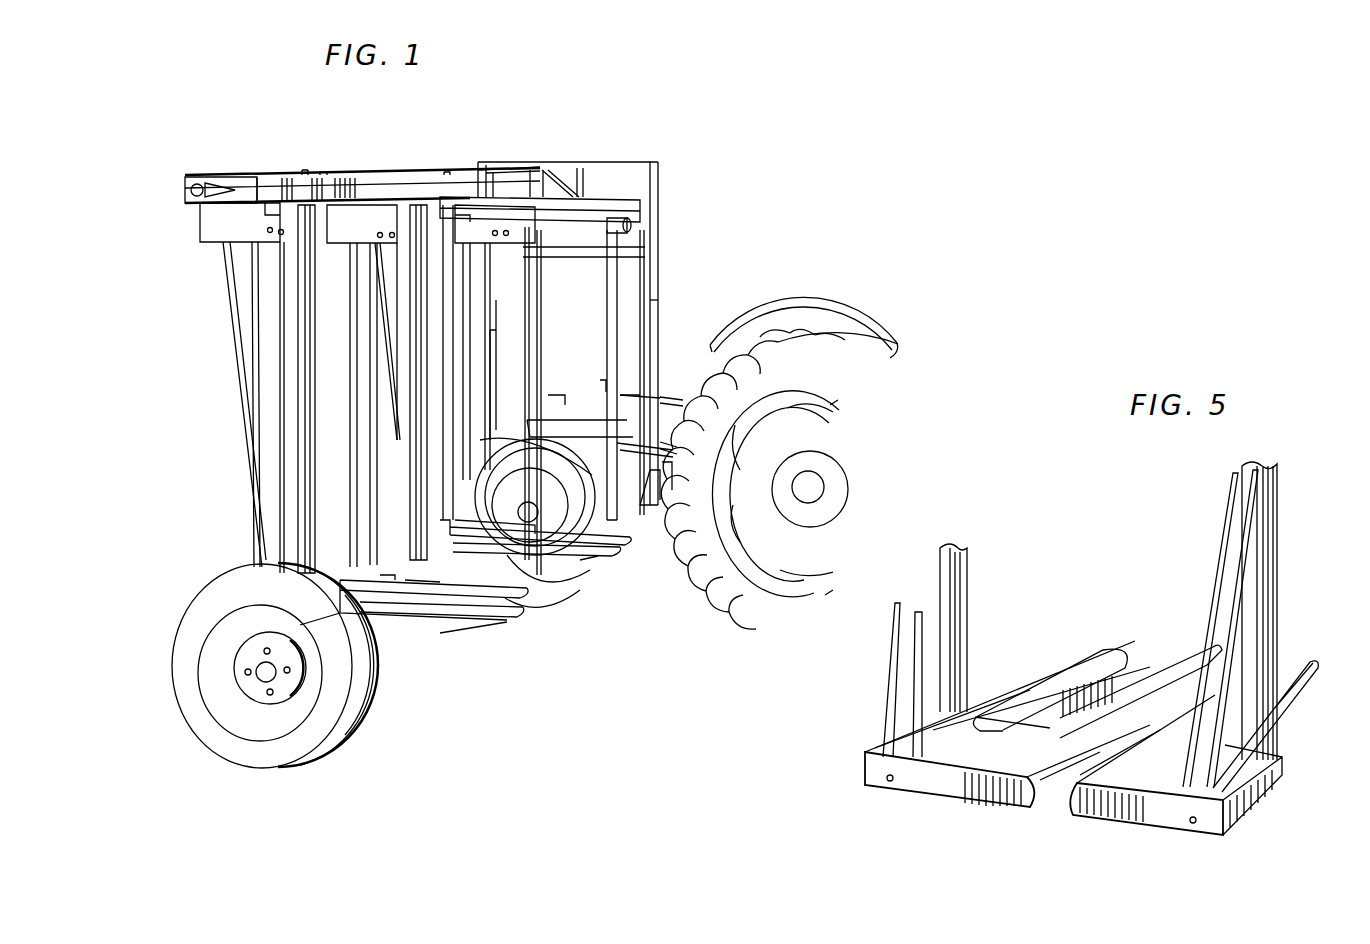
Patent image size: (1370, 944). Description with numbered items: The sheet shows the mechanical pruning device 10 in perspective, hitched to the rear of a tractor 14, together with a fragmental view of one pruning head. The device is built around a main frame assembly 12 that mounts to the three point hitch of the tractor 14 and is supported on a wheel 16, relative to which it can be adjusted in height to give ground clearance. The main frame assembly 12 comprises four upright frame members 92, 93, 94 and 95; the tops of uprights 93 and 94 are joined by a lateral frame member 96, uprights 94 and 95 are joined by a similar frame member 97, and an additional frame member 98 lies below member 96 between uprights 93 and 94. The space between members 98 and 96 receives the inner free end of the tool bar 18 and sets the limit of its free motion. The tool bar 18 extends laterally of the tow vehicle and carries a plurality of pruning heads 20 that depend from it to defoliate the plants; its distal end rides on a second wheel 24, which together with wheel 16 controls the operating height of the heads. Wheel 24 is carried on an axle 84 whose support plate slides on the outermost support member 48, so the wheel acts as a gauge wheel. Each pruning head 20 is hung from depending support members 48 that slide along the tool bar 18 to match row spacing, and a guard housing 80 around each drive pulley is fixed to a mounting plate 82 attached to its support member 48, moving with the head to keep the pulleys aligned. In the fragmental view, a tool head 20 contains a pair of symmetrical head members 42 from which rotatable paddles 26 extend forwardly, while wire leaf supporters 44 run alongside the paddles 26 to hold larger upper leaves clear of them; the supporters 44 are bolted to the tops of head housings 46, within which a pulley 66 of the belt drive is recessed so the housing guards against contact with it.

In FIG. 1, the mechanical pruning device 10 is at (716, 213).
In FIG. 1, the main frame assembly 12 is at (645, 152).
In FIG. 1, the tractor 14 is at (868, 310).
In FIG. 1, the wheel 16 is at (548, 445).
In FIG. 1, the tool bar 18 is at (356, 192).
In FIG. 1, the pruning head 20 is at (590, 575).
In FIG. 5, the pruning head 20 is at (1058, 608).
In FIG. 1, the second wheel 24 is at (315, 722).
In FIG. 5, the rotatable paddle 26 is at (1153, 672).
In FIG. 5, the head member 42 is at (1089, 664).
In FIG. 5, the wire leaf supporter 44 is at (1104, 646).
In FIG. 5, the head housing 46 is at (955, 778).
In FIG. 1, the support member 48 is at (297, 362).
In FIG. 5, the support member 48 is at (955, 608).
In FIG. 5, the pulley 66 is at (890, 760).
In FIG. 1, the housing 80 is at (468, 227).
In FIG. 1, the mounting plate 82 is at (215, 230).
In FIG. 1, the axle 84 is at (265, 672).
In FIG. 1, the upright frame member 92 is at (617, 337).
In FIG. 1, the upright frame member 93 is at (652, 275).
In FIG. 1, the upright frame member 94 is at (537, 305).
In FIG. 1, the upright frame member 95 is at (492, 350).
In FIG. 1, the lateral frame member 96 is at (572, 175).
In FIG. 1, the lateral frame member 97 is at (498, 170).
In FIG. 1, the additional frame member 98 is at (634, 223).